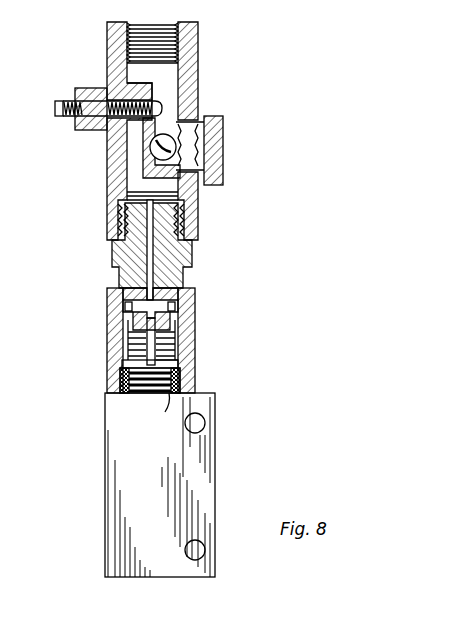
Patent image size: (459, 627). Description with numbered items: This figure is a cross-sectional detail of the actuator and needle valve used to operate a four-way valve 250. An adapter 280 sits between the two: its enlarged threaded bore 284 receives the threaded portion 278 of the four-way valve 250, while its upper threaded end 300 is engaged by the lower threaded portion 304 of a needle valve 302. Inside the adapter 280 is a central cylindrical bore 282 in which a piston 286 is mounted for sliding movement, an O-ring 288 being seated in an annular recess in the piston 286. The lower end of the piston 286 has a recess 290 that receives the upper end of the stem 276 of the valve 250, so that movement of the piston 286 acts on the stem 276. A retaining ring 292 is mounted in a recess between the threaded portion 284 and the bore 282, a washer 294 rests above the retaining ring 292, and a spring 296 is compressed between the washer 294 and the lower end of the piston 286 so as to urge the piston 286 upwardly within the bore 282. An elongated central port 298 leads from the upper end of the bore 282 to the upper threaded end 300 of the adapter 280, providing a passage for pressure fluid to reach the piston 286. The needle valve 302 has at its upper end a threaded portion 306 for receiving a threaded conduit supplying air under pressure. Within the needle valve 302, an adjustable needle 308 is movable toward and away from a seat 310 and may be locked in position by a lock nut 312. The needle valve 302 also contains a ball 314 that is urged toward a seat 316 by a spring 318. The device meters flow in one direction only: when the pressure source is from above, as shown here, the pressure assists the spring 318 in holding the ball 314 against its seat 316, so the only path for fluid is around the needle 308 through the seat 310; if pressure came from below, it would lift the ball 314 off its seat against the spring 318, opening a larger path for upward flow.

The four-way valve 250 is at (198, 487).
The stem 276 is at (156, 342).
The threaded portion 278 is at (149, 412).
The adapter 280 is at (108, 291).
The central cylindrical bore 282 is at (127, 323).
The enlarged threaded bore 284 is at (194, 372).
The piston 286 is at (168, 302).
The O-ring 288 is at (177, 307).
The recess 290 is at (140, 335).
The retaining ring 292 is at (120, 358).
The washer 294 is at (164, 352).
The spring 296 is at (162, 333).
The elongated central port 298 is at (148, 253).
The upper threaded end 300 is at (198, 218).
The needle valve 302 is at (196, 62).
The lower threaded portion 304 is at (118, 212).
The threaded portion 306 is at (167, 23).
The adjustable needle 308 is at (161, 111).
The seat 310 is at (163, 104).
The lock nut 312 is at (80, 88).
The ball 314 is at (148, 160).
The seat 316 is at (150, 147).
The spring 318 is at (224, 148).